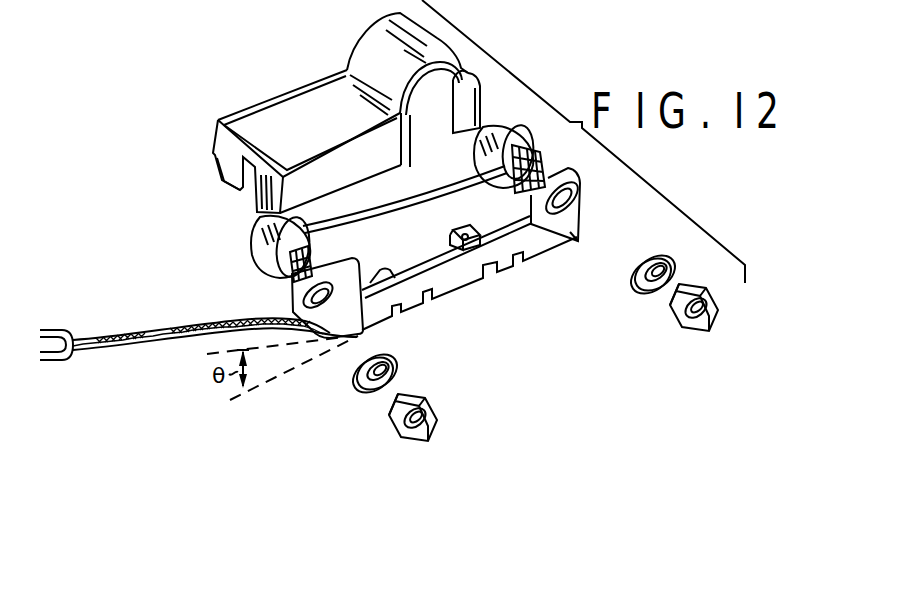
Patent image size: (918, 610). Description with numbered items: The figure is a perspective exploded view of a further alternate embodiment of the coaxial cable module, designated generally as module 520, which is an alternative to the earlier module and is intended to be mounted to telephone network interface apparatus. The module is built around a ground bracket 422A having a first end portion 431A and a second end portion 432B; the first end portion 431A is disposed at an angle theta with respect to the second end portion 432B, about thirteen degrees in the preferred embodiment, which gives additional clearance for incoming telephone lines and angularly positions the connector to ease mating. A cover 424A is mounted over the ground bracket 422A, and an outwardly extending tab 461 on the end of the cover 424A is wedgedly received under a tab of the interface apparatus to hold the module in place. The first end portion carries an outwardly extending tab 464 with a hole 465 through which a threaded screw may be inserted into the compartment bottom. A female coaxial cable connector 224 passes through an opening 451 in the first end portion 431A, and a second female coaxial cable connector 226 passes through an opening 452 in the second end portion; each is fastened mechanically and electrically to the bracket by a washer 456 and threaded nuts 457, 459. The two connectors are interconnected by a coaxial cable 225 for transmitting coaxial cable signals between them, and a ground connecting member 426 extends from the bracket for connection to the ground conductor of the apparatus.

The coaxial cable module 520 is at (203, 76).
The cover 424A is at (314, 92).
The tab 461 is at (216, 182).
The female coaxial cable connector 226 is at (523, 123).
The coaxial cable 225 is at (367, 212).
The hole 465 is at (490, 208).
The opening 452 is at (571, 208).
The second end portion 432B is at (592, 222).
The female coaxial cable connector 224 is at (262, 268).
The tab 464 is at (382, 273).
The first end portion 431A is at (276, 301).
The opening 451 is at (290, 313).
The ground connecting member 426 is at (145, 348).
The washer 456 is at (365, 390).
The threaded nut 457 is at (431, 434).
The ground bracket 422A is at (482, 300).
The threaded nut 459 is at (690, 337).